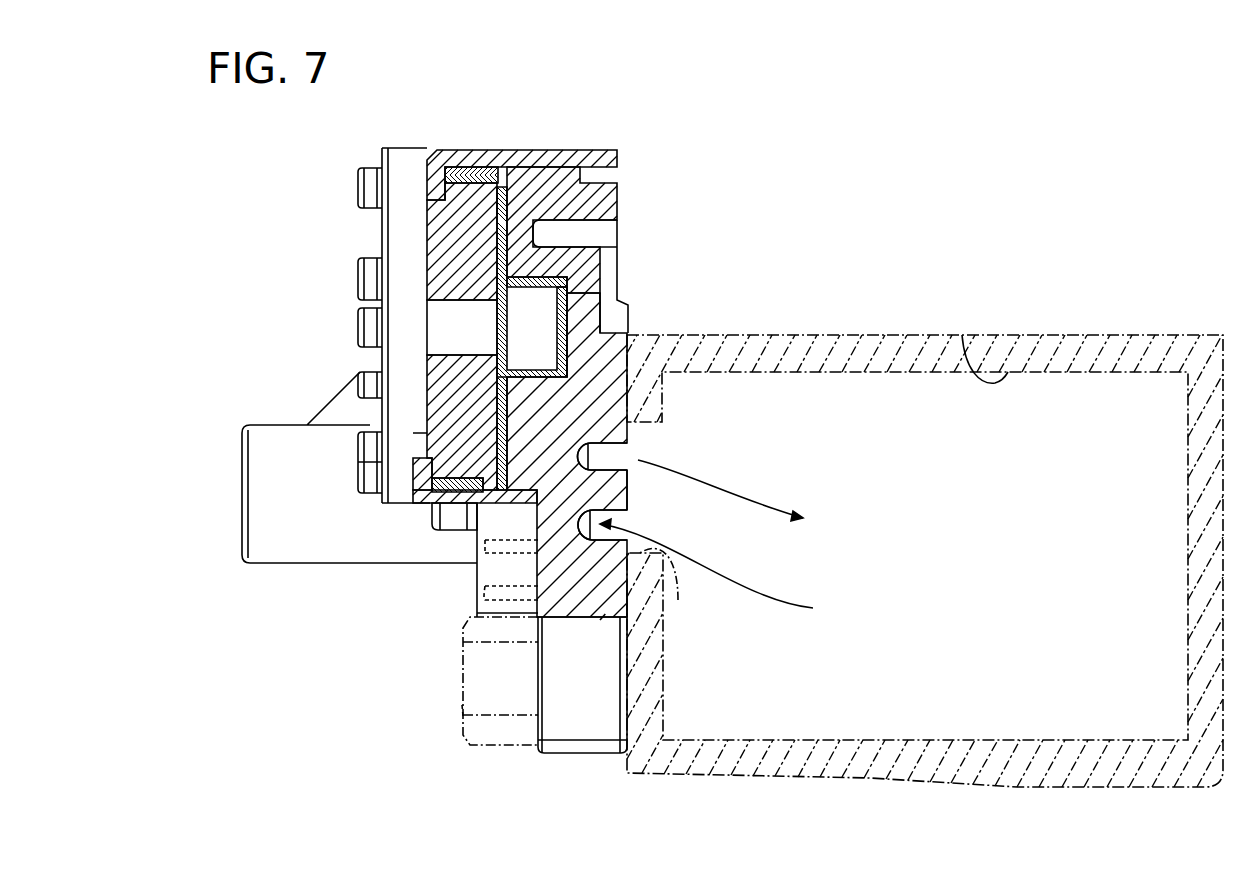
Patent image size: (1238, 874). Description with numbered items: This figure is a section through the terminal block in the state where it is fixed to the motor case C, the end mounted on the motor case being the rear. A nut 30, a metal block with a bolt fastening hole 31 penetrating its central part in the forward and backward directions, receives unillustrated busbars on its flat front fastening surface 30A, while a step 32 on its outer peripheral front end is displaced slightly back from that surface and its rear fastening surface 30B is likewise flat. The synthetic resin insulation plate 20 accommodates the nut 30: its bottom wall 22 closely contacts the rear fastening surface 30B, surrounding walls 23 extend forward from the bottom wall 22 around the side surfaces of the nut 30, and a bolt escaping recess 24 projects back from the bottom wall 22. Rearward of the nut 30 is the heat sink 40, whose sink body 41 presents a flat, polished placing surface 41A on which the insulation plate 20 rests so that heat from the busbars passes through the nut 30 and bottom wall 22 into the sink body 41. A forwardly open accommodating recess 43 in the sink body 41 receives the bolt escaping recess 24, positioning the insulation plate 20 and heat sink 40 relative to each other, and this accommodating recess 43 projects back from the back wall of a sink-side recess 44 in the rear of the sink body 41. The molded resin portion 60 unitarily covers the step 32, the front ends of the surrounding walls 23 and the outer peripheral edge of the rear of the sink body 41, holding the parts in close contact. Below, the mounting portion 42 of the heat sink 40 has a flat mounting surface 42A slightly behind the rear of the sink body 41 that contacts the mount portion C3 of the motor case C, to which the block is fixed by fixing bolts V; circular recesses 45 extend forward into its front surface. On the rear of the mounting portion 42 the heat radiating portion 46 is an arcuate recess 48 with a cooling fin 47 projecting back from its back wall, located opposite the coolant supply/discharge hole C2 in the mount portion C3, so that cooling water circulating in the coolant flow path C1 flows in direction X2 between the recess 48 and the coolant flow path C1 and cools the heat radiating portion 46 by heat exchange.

The insulation plate 20 is at (567, 302).
The bottom wall 22 is at (477, 442).
The surrounding walls 23 is at (463, 492).
The bolt escaping recesses 24 is at (538, 281).
The nuts 30 is at (425, 230).
The front fastening surface 30A is at (423, 410).
The rear fastening surface 30B is at (507, 190).
The bolt fastening hole 31 is at (463, 302).
The step 32 is at (432, 192).
The heat sink 40 is at (627, 358).
The sink body 41 is at (607, 202).
The placing surface 41A is at (497, 207).
The mounting portion 42 is at (560, 672).
The mounting surface 42A is at (633, 596).
The accommodating recesses 43 is at (533, 290).
The sink-side recess 44 is at (567, 224).
The circular recesses 45 is at (497, 563).
The heat radiating portion 46 is at (838, 277).
The cooling fin 47 is at (615, 487).
The recess 48 is at (625, 468).
The molded resin portion 60 is at (467, 143).
The motor case C is at (1103, 335).
The coolant flow path C1 is at (962, 335).
The coolant supply/discharge hole C2 is at (678, 600).
The mount portion C3 is at (607, 612).
The fixing bolts V is at (462, 712).
The direction X2 is at (743, 497).